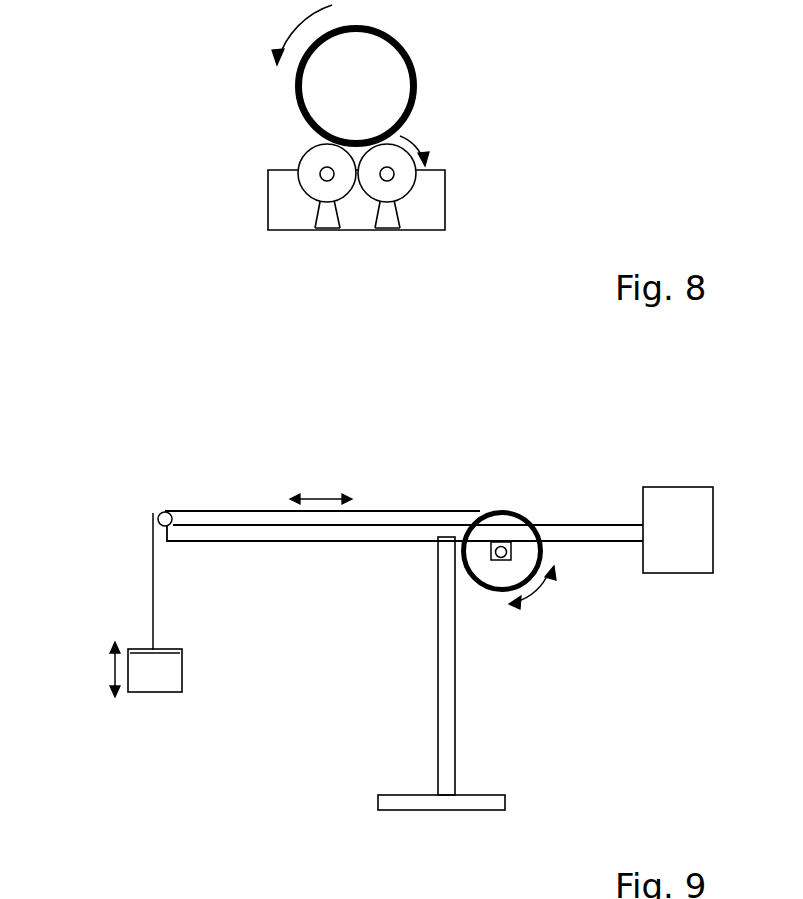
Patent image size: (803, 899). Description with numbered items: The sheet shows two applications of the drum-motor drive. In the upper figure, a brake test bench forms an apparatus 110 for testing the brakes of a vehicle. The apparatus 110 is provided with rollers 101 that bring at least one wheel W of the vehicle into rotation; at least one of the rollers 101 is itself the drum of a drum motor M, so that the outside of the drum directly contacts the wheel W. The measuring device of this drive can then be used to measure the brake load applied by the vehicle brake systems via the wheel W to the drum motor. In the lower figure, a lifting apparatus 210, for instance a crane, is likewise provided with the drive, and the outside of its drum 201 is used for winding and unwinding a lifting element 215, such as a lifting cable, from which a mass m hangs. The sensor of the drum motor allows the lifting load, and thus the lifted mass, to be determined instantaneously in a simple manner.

In FIG. 8, the wheel W is at (420, 83).
In FIG. 8, the apparatus for testing brakes 110 is at (294, 169).
In FIG. 8, the rollers 101 is at (410, 190).
In FIG. 9, the drum 201 is at (517, 512).
In FIG. 9, the lifting apparatus 210 is at (580, 459).
In FIG. 9, the lifting element 215 is at (152, 615).